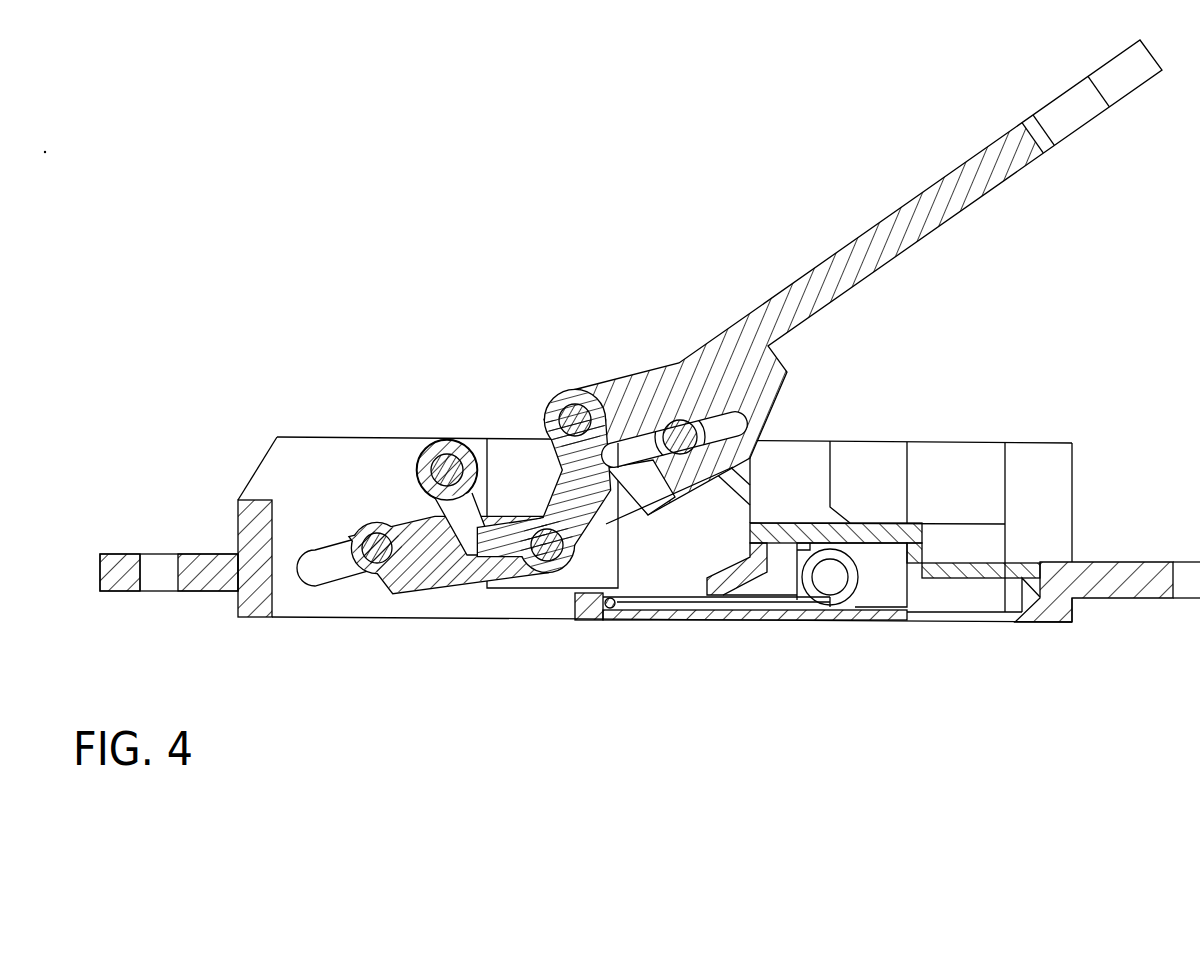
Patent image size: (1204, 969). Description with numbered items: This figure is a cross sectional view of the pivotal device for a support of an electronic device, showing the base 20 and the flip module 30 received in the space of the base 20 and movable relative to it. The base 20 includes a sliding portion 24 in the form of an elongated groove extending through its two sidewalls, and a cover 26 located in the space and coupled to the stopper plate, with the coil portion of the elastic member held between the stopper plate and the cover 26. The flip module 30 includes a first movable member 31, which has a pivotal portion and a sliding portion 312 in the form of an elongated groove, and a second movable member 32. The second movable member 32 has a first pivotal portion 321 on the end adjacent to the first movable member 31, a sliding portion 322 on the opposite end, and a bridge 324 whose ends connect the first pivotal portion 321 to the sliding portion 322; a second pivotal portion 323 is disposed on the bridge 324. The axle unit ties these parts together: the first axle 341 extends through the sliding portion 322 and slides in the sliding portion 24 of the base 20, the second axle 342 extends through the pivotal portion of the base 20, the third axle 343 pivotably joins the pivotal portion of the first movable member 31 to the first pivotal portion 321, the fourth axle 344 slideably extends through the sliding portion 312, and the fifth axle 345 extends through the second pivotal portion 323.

The base 20 is at (963, 632).
The sliding portion 24 is at (330, 585).
The cover 26 is at (884, 535).
The flip module 30 is at (738, 369).
The first movable member 31 is at (798, 295).
The sliding portion 312 is at (737, 425).
The second movable member 32 is at (431, 536).
The first pivotal portion 321 is at (578, 392).
The sliding portion 322 is at (353, 527).
The second pivotal portion 323 is at (551, 587).
The bridge 324 is at (460, 574).
The first axle 341 is at (377, 562).
The second axle 342 is at (447, 462).
The third axle 343 is at (563, 408).
The fourth axle 344 is at (679, 425).
The fifth axle 345 is at (545, 530).